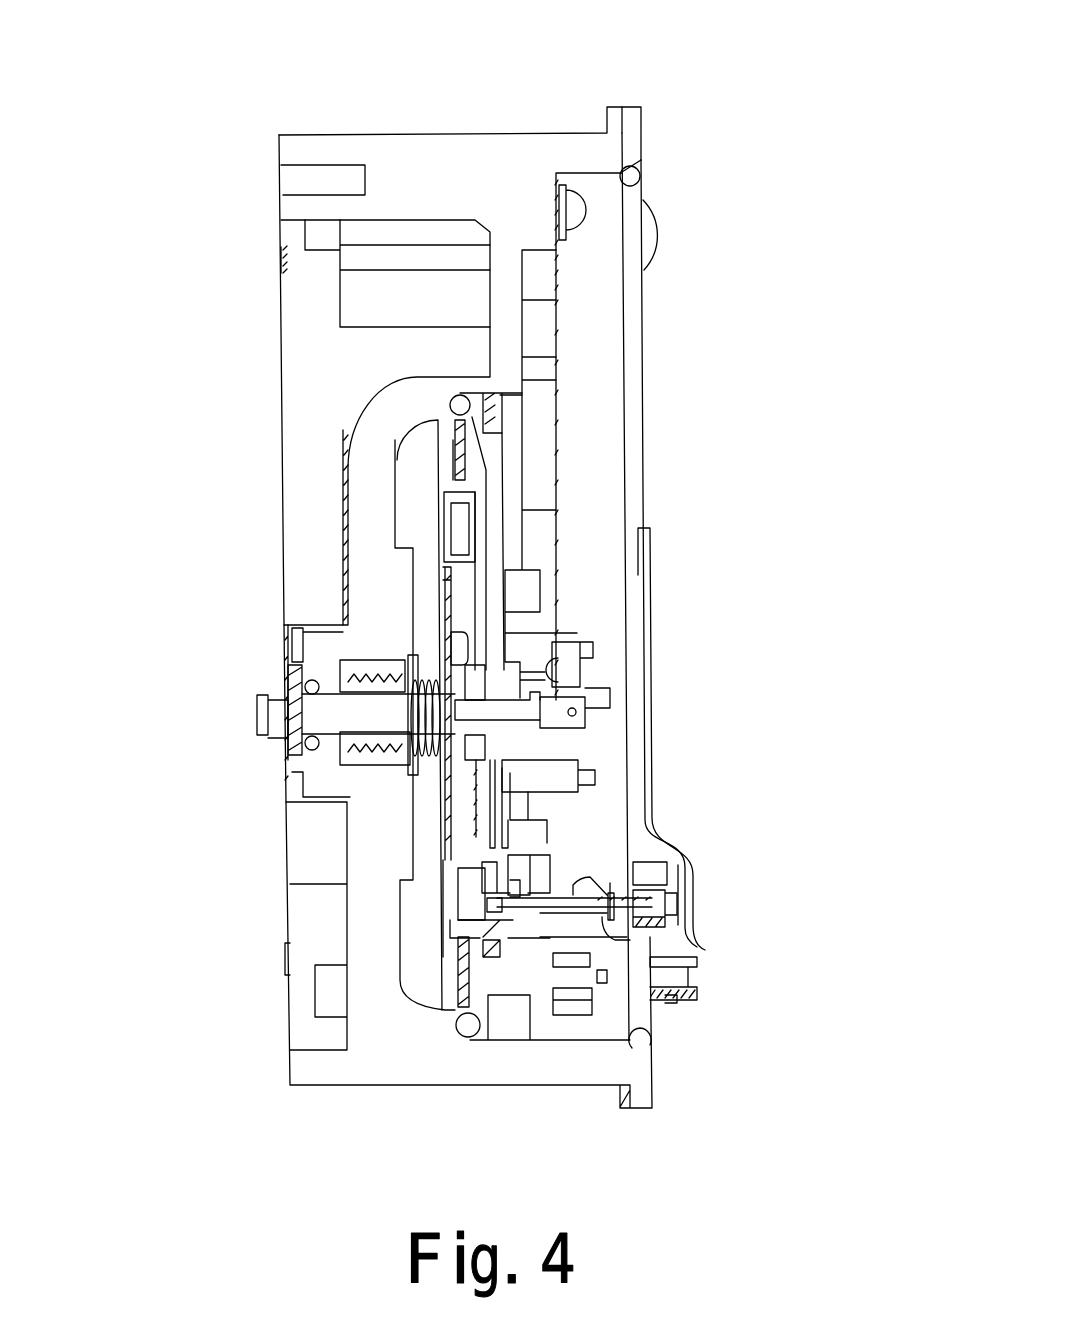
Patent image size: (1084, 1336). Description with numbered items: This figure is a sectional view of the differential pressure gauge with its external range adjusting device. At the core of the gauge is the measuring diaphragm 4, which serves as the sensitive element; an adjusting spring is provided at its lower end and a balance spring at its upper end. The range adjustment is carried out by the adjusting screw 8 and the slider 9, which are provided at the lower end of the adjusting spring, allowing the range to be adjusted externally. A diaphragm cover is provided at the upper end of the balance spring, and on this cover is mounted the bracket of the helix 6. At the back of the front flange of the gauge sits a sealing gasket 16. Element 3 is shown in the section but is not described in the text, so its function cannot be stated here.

The sealing gasket 16 is at (607, 118).
The mounting plate 3 is at (540, 188).
The measuring diaphragm 4 is at (463, 583).
The adjusting screw 8 is at (335, 716).
The slider 9 is at (343, 765).
The bracket of the helix 6 is at (687, 943).